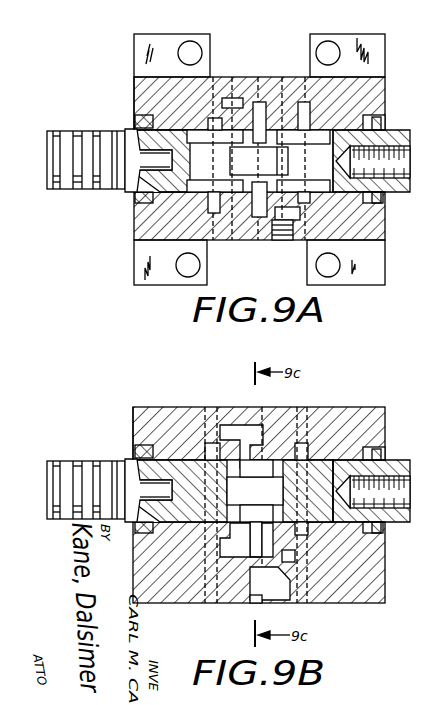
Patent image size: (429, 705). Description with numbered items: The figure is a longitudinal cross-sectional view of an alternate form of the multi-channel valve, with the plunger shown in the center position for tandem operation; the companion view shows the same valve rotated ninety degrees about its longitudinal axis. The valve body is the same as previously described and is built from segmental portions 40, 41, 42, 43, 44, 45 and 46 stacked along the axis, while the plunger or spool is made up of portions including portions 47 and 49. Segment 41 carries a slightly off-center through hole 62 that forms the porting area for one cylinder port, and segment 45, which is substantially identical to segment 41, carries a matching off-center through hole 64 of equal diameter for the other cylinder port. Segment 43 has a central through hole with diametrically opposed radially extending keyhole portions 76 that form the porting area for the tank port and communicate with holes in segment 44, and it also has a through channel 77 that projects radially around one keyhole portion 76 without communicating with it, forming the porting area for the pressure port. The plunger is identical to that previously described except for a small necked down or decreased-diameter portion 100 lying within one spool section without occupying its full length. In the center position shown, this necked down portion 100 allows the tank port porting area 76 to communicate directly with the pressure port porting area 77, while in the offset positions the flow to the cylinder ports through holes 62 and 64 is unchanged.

In FIG. 9A, the body segment 40 is at (386, 82).
In FIG. 9B, the body segment 40 is at (386, 412).
In FIG. 9A, the body segment 41 is at (305, 80).
In FIG. 9B, the body segment 41 is at (305, 412).
In FIG. 9A, the body segment 42 is at (283, 79).
In FIG. 9B, the body segment 42 is at (283, 412).
In FIG. 9A, the body segment 43 is at (258, 80).
In FIG. 9B, the body segment 43 is at (262, 412).
In FIG. 9A, the body segment 44 is at (232, 80).
In FIG. 9B, the body segment 44 is at (230, 407).
In FIG. 9A, the body segment 45 is at (213, 80).
In FIG. 9B, the body segment 45 is at (205, 407).
In FIG. 9A, the body segment 46 is at (140, 89).
In FIG. 9B, the body segment 46 is at (138, 426).
In FIG. 9A, the plunger portion 47 is at (402, 193).
In FIG. 9B, the plunger portion 47 is at (404, 523).
In FIG. 9A, the plunger portion 49 is at (126, 135).
In FIG. 9B, the plunger portion 49 is at (126, 465).
In FIG. 9A, the through hole 62 is at (312, 114).
In FIG. 9B, the through hole 62 is at (300, 572).
In FIG. 9A, the through hole 64 is at (208, 203).
In FIG. 9B, the through hole 64 is at (230, 545).
In FIG. 9B, the keyhole portion 76 is at (244, 470).
In FIG. 9A, the through channel 77 is at (268, 120).
In FIG. 9A, the necked down portion 100 is at (244, 212).